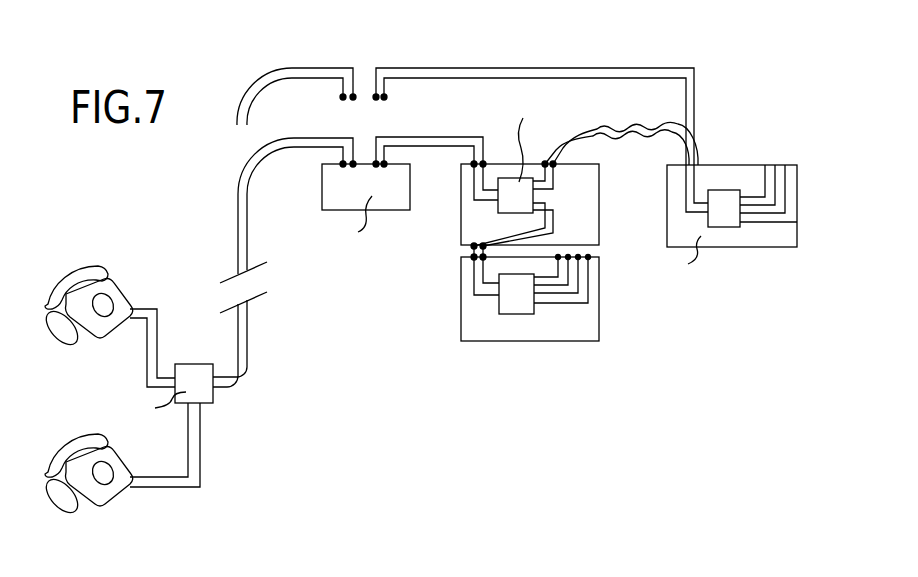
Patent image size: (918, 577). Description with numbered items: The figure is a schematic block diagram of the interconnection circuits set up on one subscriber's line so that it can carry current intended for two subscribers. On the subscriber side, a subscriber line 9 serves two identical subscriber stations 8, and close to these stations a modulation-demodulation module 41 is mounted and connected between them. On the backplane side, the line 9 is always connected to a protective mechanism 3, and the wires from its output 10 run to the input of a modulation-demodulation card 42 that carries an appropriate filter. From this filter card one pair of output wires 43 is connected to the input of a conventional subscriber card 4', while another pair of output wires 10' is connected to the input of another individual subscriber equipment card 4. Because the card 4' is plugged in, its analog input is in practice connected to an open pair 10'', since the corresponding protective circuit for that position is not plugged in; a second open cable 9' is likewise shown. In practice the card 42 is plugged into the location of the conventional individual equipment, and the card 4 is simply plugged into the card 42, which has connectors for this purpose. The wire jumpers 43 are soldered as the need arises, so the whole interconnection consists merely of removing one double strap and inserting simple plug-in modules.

The protective mechanism 3 is at (329, 193).
The individual subscriber equipment card 4 is at (526, 339).
The conventional subscriber card 4' is at (718, 235).
The subscriber station 8 is at (102, 327).
The subscriber line 9 is at (283, 262).
The subscriber line cable 9' is at (296, 71).
The output of protective mechanism 10 is at (431, 135).
The pair of output wires 10' is at (453, 255).
The open pair 10'' is at (540, 120).
The modulation-demodulation module 41 is at (195, 365).
The modulation-demodulation card 42 is at (472, 209).
The pair of output wires 43 is at (618, 114).